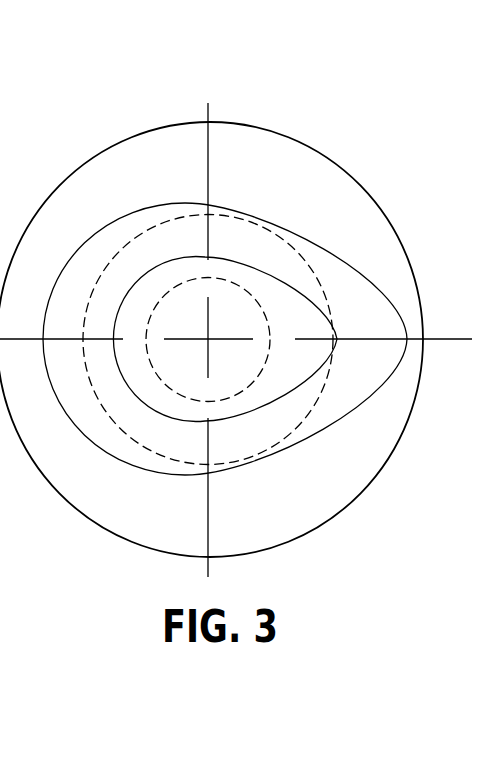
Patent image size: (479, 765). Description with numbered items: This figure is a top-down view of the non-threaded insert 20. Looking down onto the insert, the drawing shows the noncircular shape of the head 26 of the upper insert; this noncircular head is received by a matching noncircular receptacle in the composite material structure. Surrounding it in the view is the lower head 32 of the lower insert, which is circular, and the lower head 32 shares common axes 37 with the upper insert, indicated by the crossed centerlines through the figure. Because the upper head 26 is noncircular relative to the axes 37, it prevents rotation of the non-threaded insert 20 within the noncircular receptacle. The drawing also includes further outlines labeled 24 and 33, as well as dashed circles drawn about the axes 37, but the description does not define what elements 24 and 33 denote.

The non-threaded insert 20 is at (372, 128).
The inner race circle 24 is at (316, 402).
The head 26 is at (298, 242).
The lower head 32 is at (54, 193).
The horizontal axis 33 is at (460, 338).
The axes 37 is at (208, 115).